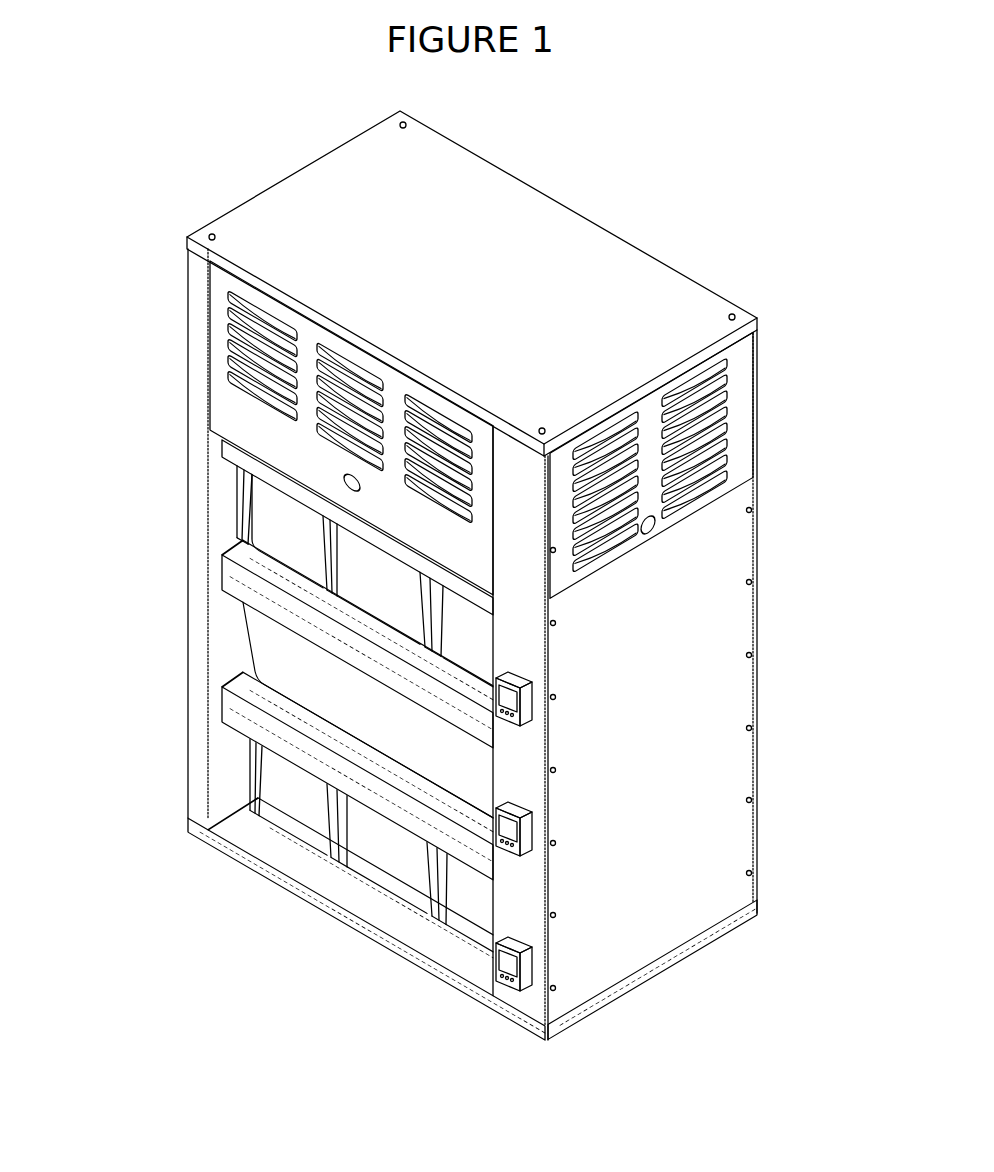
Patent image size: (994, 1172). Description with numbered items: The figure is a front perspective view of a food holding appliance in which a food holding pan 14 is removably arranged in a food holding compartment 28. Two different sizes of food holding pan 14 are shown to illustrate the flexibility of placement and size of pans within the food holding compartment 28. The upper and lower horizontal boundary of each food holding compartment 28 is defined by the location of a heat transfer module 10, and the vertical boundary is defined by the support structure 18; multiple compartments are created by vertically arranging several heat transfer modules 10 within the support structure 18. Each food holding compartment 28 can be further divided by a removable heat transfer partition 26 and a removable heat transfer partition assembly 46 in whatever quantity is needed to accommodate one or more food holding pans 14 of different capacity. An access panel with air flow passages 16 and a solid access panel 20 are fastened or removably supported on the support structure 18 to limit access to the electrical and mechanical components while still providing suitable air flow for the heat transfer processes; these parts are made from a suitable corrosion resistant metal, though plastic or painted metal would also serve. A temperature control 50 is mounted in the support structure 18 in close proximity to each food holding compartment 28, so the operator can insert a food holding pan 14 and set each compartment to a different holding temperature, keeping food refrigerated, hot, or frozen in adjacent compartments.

The heat transfer module 10 is at (360, 530).
The food holding pan 14 is at (285, 517).
The access panel with air flow passages 16 is at (275, 433).
The support structure 18 is at (197, 748).
The solid access panel 20 is at (570, 333).
The removable heat transfer partition 26 is at (237, 524).
The food holding compartment 28 is at (222, 655).
The removable heat transfer partition assembly 46 is at (425, 632).
The temperature control 50 is at (523, 705).